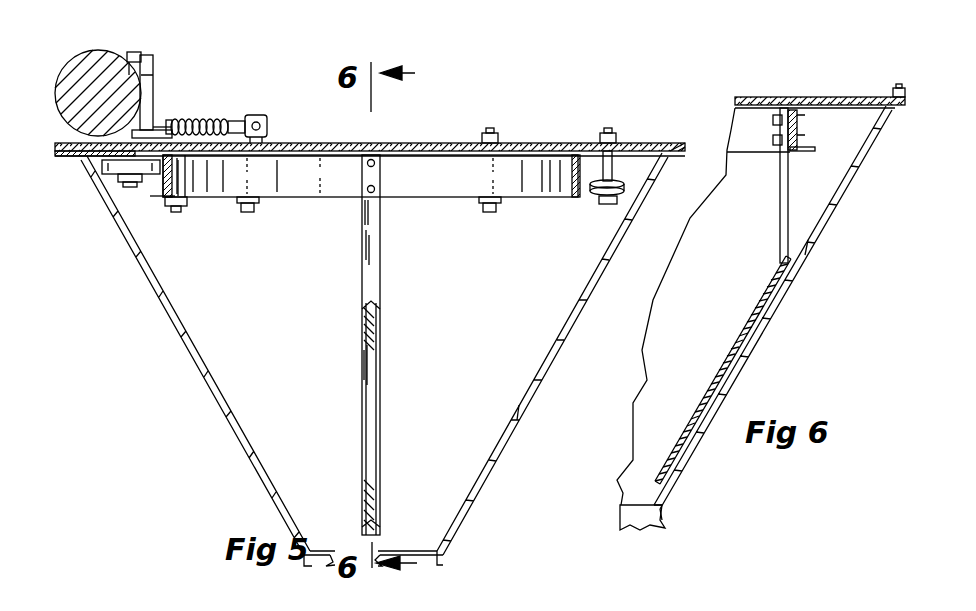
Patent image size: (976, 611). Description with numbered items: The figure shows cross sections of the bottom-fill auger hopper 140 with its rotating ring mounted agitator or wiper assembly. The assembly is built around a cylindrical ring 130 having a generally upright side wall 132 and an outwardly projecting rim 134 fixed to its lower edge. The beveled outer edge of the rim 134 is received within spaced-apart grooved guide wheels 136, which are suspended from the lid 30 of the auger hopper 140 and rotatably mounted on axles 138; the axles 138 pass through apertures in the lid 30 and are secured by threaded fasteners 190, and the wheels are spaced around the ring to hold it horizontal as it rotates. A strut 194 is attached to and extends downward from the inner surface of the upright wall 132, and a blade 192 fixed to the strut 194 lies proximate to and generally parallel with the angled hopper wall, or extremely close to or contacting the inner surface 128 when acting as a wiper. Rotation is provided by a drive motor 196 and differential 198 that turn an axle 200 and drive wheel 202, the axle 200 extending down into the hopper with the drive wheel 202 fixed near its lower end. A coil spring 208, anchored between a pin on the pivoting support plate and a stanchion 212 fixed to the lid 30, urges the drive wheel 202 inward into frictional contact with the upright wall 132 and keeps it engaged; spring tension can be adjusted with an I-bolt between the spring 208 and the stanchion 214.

In FIG. 5, the lid 30 is at (533, 141).
In FIG. 6, the lid 30 is at (744, 97).
In FIG. 5, the inner surface 128 is at (512, 413).
In FIG. 6, the inner surface 128 is at (812, 224).
In FIG. 5, the cylindrical ring 130 is at (318, 198).
In FIG. 6, the cylindrical ring 130 is at (752, 152).
In FIG. 5, the upright side wall 132 is at (177, 200).
In FIG. 6, the upright side wall 132 is at (798, 127).
In FIG. 5, the rim 134 is at (150, 198).
In FIG. 6, the rim 134 is at (808, 152).
In FIG. 5, the grooved guide wheels 136 is at (250, 206).
In FIG. 5, the axles 138 is at (614, 156).
In FIG. 5, the auger hopper 140 is at (519, 412).
In FIG. 6, the auger hopper 140 is at (808, 255).
In FIG. 5, the threaded fasteners 190 is at (490, 130).
In FIG. 5, the blade 192 is at (366, 370).
In FIG. 6, the blade 192 is at (733, 352).
In FIG. 5, the strut 194 is at (379, 285).
In FIG. 6, the strut 194 is at (780, 241).
In FIG. 5, the drive motor 196 is at (100, 50).
In FIG. 5, the differential 198 is at (147, 68).
In FIG. 5, the axle 200 is at (95, 157).
In FIG. 5, the drive wheel 202 is at (113, 178).
In FIG. 5, the coil spring 208 is at (177, 121).
In FIG. 5, the stanchion 212 is at (263, 138).
In FIG. 5, the stanchion 214 is at (231, 118).